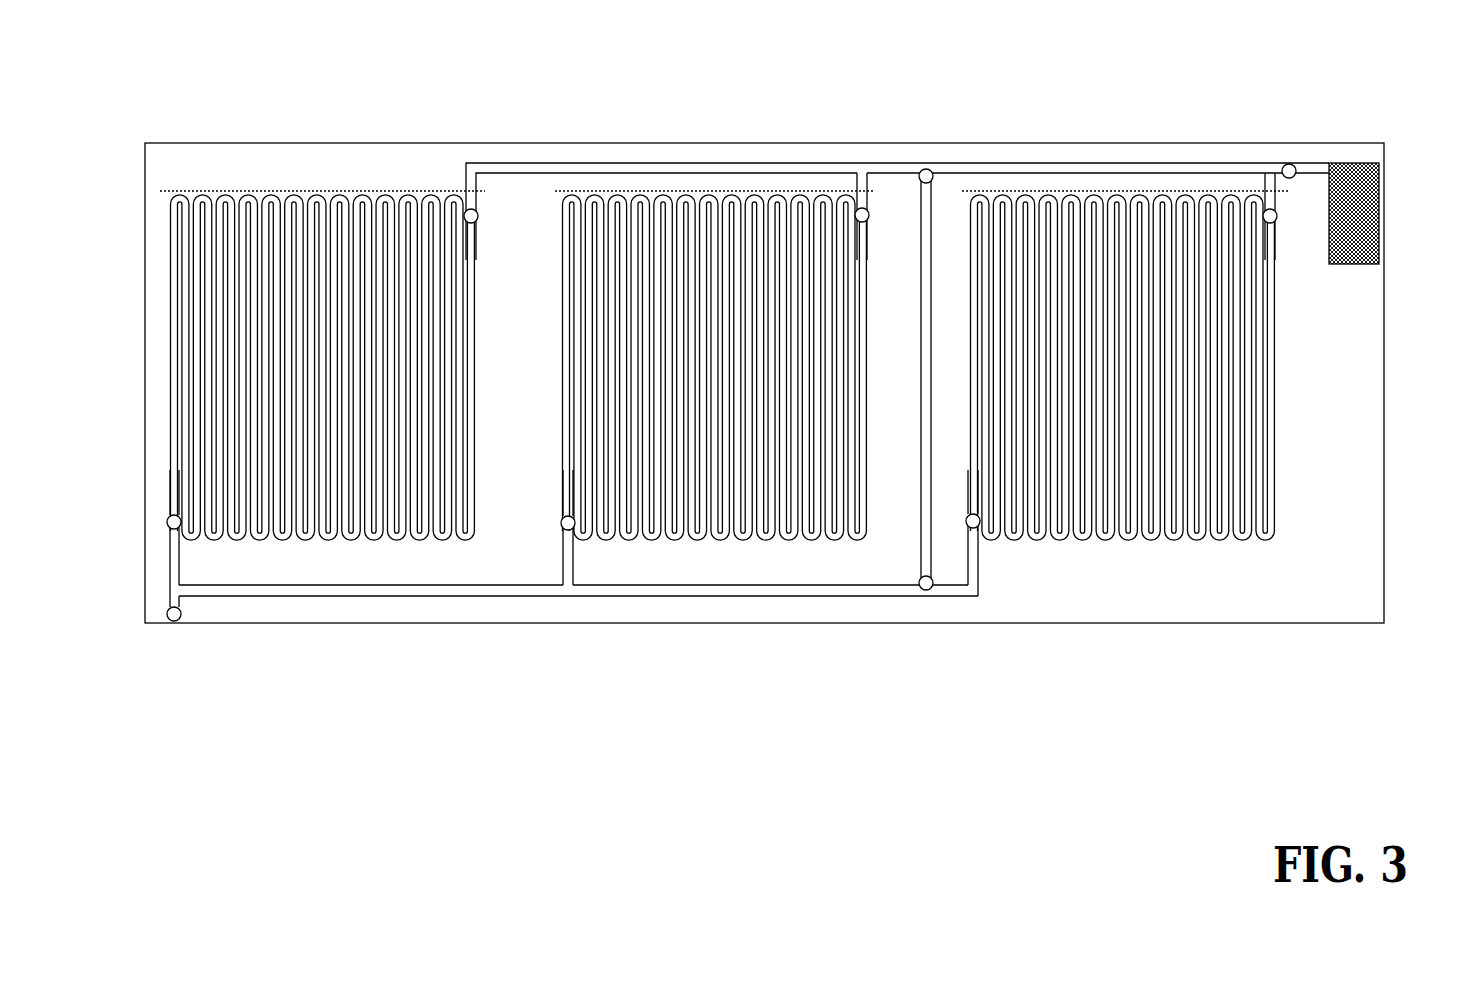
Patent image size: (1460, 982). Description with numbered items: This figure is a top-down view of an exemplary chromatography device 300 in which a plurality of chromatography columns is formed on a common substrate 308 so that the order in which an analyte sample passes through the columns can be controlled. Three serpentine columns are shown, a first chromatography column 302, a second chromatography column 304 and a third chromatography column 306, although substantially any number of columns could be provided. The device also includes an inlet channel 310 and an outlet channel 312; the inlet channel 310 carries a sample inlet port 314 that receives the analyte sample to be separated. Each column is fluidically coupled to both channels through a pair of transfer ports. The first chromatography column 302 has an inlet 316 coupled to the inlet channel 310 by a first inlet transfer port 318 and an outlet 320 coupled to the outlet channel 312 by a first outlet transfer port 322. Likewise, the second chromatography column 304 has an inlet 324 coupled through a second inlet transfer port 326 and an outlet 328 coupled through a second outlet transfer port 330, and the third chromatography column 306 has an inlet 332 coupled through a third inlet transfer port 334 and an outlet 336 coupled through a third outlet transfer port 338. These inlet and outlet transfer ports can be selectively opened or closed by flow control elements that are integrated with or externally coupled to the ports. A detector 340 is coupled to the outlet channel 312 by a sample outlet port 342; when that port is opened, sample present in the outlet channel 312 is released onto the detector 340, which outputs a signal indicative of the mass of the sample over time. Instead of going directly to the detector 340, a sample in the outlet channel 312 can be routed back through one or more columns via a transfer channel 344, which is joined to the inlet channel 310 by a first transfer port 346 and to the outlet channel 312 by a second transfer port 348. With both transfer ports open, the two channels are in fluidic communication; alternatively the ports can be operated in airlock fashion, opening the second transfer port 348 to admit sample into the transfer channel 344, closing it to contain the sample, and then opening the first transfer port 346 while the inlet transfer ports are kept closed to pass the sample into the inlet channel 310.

The chromatography device 300 is at (1104, 74).
The first chromatography column 302 is at (345, 549).
The second chromatography column 304 is at (730, 550).
The third chromatography column 306 is at (1107, 560).
The common substrate 308 is at (765, 143).
The inlet channel 310 is at (762, 598).
The outlet channel 312 is at (866, 160).
The sample inlet port 314 is at (181, 619).
The inlet 316 is at (167, 511).
The first inlet transfer port 318 is at (169, 528).
The outlet 320 is at (481, 228).
The first outlet transfer port 322 is at (478, 213).
The inlet 324 is at (561, 513).
The second inlet transfer port 326 is at (562, 530).
The outlet 328 is at (868, 226).
The second outlet transfer port 330 is at (869, 214).
The inlet 332 is at (966, 511).
The third inlet transfer port 334 is at (980, 528).
The outlet 336 is at (1273, 226).
The third outlet transfer port 338 is at (1277, 215).
The detector 340 is at (1380, 215).
The sample outlet port 342 is at (1293, 166).
The transfer channel 344 is at (919, 306).
The first transfer port 346 is at (932, 588).
The second transfer port 348 is at (932, 170).